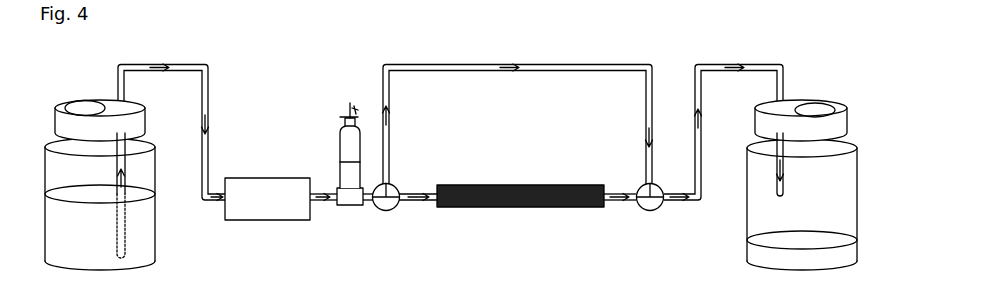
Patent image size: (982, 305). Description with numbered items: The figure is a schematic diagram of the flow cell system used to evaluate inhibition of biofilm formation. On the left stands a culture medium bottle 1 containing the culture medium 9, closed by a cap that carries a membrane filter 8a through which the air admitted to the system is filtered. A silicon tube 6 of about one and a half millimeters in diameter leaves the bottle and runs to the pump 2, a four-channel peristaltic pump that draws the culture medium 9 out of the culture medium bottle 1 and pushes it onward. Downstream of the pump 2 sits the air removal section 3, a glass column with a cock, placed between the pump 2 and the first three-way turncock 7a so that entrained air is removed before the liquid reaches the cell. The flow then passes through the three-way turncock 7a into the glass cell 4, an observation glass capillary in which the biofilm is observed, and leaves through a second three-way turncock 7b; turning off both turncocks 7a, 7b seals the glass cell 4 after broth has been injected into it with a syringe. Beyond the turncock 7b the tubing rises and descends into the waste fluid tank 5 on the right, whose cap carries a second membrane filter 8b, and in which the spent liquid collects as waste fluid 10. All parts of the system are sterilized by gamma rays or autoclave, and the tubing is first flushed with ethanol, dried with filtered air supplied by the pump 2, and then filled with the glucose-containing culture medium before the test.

The culture medium bottle 1 is at (141, 171).
The pump 2 is at (313, 212).
The air removal section 3 is at (341, 122).
The glass cell 4 is at (520, 208).
The waste fluid tank 5 is at (774, 163).
The silicon tube 6 is at (209, 83).
The three-way turncock 7a is at (392, 206).
The three-way turncock 7b is at (648, 211).
The membrane filter 8a is at (88, 105).
The membrane filter 8b is at (823, 106).
The culture medium 9 is at (88, 254).
The waste fluid 10 is at (762, 255).